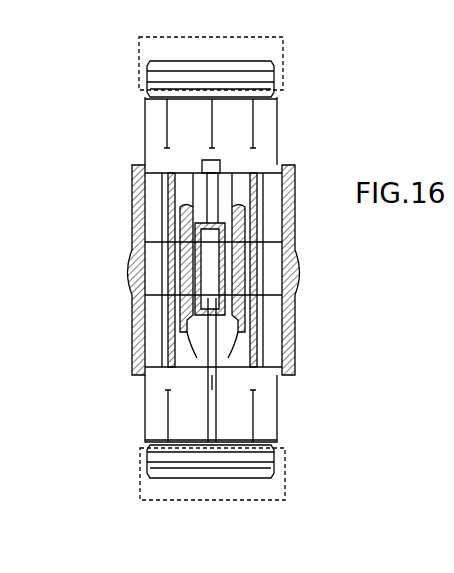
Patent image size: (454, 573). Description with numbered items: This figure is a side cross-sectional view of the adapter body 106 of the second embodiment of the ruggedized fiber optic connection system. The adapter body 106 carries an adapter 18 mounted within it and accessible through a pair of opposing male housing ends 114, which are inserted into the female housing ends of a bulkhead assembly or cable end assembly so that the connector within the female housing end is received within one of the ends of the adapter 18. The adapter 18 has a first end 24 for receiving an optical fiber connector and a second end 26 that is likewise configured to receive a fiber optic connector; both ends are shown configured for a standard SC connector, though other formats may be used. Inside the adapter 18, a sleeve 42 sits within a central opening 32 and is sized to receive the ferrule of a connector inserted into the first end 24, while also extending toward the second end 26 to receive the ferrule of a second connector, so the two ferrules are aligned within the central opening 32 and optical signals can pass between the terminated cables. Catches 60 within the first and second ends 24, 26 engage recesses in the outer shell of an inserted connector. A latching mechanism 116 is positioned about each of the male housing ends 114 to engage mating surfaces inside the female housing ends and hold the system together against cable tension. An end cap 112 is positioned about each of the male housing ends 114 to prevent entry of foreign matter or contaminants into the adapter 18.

The adapter 18 is at (253, 237).
The first end 24 is at (197, 185).
The second end 26 is at (197, 358).
The central opening 32 is at (208, 303).
The sleeve 42 is at (203, 257).
The catches 60 is at (232, 207).
The adapter body 106 is at (228, 407).
The end cap 112 is at (270, 45).
The male housing ends 114 is at (180, 65).
The latching mechanism 116 is at (243, 113).